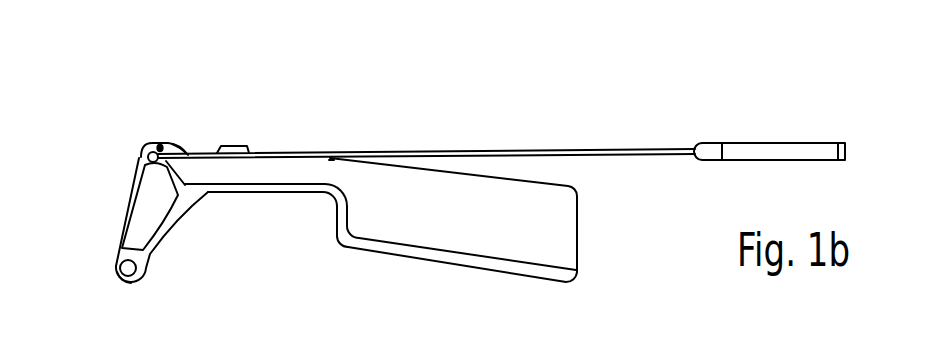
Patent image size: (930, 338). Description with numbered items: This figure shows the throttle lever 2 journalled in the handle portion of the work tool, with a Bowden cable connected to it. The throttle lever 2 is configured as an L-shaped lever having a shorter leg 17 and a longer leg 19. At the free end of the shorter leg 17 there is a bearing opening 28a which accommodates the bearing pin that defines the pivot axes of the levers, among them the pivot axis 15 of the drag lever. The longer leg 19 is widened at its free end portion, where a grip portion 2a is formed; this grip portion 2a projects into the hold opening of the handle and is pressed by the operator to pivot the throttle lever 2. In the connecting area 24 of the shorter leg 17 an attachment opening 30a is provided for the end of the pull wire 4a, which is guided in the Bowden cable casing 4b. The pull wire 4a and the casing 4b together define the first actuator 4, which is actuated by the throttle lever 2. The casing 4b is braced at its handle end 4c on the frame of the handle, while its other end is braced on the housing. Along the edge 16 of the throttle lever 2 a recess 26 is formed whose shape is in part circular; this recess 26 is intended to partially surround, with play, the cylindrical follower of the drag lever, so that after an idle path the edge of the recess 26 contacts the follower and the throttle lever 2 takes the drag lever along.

The throttle lever 2 is at (277, 194).
The grip portion 2a is at (463, 240).
The first actuator 4 is at (764, 125).
The pull wire 4a is at (581, 149).
The Bowden cable casing 4b is at (823, 148).
The handle end 4c is at (705, 148).
The pivot axis 15 is at (130, 270).
The edge 16 is at (249, 145).
The shorter leg 17 is at (148, 196).
The longer leg 19 is at (331, 172).
The connecting area 24 is at (127, 151).
The recess 26 is at (190, 147).
The bearing opening 28a is at (118, 287).
The attachment opening 30a is at (146, 142).